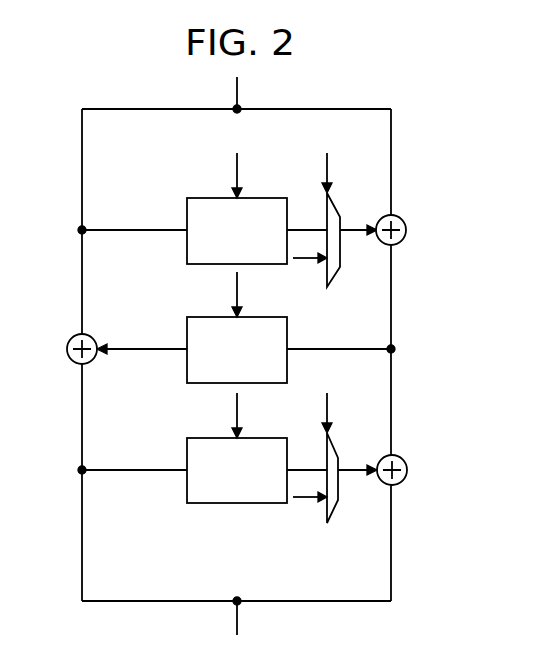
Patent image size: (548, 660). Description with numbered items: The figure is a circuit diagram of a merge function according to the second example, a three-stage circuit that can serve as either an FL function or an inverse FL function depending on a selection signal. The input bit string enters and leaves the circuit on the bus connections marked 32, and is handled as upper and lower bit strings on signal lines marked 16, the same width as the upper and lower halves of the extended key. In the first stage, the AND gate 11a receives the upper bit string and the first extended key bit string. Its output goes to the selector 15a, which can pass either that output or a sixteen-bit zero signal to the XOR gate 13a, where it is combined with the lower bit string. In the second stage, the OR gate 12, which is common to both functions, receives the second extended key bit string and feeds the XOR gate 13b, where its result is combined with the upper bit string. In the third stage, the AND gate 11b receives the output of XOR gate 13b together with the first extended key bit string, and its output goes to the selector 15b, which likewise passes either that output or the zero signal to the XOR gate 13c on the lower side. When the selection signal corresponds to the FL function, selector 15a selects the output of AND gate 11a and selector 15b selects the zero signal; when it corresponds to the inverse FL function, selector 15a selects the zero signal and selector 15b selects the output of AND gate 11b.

The AND gate 11a is at (187, 198).
The AND gate 11b is at (187, 438).
The OR gate 12 is at (187, 317).
The XOR gate 13a is at (402, 220).
The XOR gate 13b is at (71, 338).
The XOR gate 13c is at (404, 459).
The selector 15a is at (341, 256).
The selector 15b is at (339, 496).
The signal line 16 is at (86, 174).
The bus line 32 is at (243, 100).